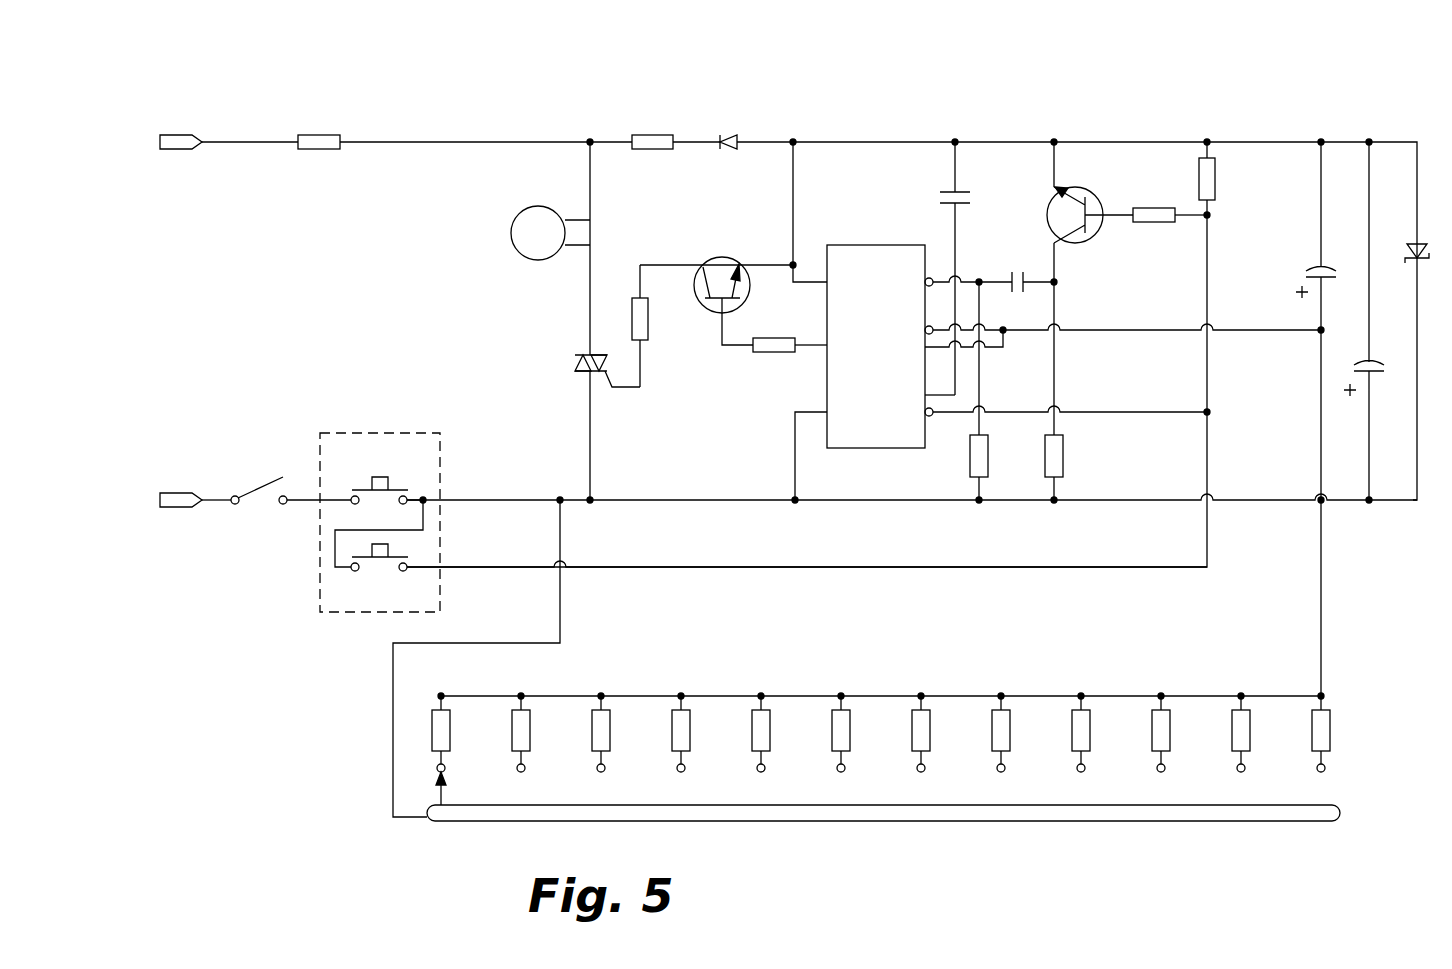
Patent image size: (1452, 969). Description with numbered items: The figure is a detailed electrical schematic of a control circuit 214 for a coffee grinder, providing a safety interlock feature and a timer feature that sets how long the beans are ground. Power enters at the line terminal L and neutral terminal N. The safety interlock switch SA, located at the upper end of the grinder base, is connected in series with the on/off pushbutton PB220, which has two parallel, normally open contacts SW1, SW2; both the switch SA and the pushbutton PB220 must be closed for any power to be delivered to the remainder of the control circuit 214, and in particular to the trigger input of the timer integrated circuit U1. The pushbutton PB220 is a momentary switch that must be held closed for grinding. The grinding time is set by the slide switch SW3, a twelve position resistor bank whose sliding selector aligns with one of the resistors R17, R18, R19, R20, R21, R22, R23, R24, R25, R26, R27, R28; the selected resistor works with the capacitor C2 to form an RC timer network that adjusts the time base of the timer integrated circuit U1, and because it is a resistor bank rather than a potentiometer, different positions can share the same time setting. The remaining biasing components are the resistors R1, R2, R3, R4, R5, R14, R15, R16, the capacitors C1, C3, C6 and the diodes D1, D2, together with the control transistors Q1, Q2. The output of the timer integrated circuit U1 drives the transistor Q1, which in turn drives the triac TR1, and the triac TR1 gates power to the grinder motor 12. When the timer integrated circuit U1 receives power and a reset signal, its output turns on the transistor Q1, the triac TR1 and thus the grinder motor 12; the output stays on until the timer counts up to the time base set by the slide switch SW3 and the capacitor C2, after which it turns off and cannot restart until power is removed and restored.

The control circuit 214 is at (1301, 106).
The grinder motor 12 is at (536, 205).
The neutral terminal N is at (181, 129).
The line terminal L is at (195, 488).
The resistor R1 is at (319, 159).
The resistor R2 is at (652, 159).
The resistor R3 is at (657, 326).
The resistor R4 is at (997, 391).
The resistor R5 is at (790, 361).
The resistor R14 is at (1079, 371).
The resistor R15 is at (1171, 231).
The resistor R16 is at (811, 354).
The resistor R17 is at (464, 732).
The resistor R18 is at (544, 732).
The resistor R19 is at (624, 732).
The resistor R20 is at (704, 732).
The resistor R21 is at (784, 732).
The resistor R22 is at (864, 732).
The resistor R23 is at (944, 732).
The resistor R24 is at (1024, 732).
The resistor R25 is at (1104, 732).
The resistor R26 is at (1184, 732).
The resistor R27 is at (1264, 732).
The resistor R28 is at (1344, 732).
The diode D1 is at (732, 159).
The diode D2 is at (1402, 237).
The capacitor C1 is at (1374, 321).
The capacitor C2 is at (1299, 419).
The capacitor C3 is at (933, 268).
The capacitor C6 is at (1028, 264).
The transistor Q1 is at (723, 286).
The transistor Q2 is at (1090, 207).
The timer integrated circuit U1 is at (866, 357).
The triac TR1 is at (581, 369).
The safety interlock switch SA is at (291, 472).
The normally open contact SW1 is at (376, 573).
The normally open contact SW2 is at (383, 472).
The slide switch SW3 is at (883, 818).
The on/off pushbutton PB220 is at (319, 579).